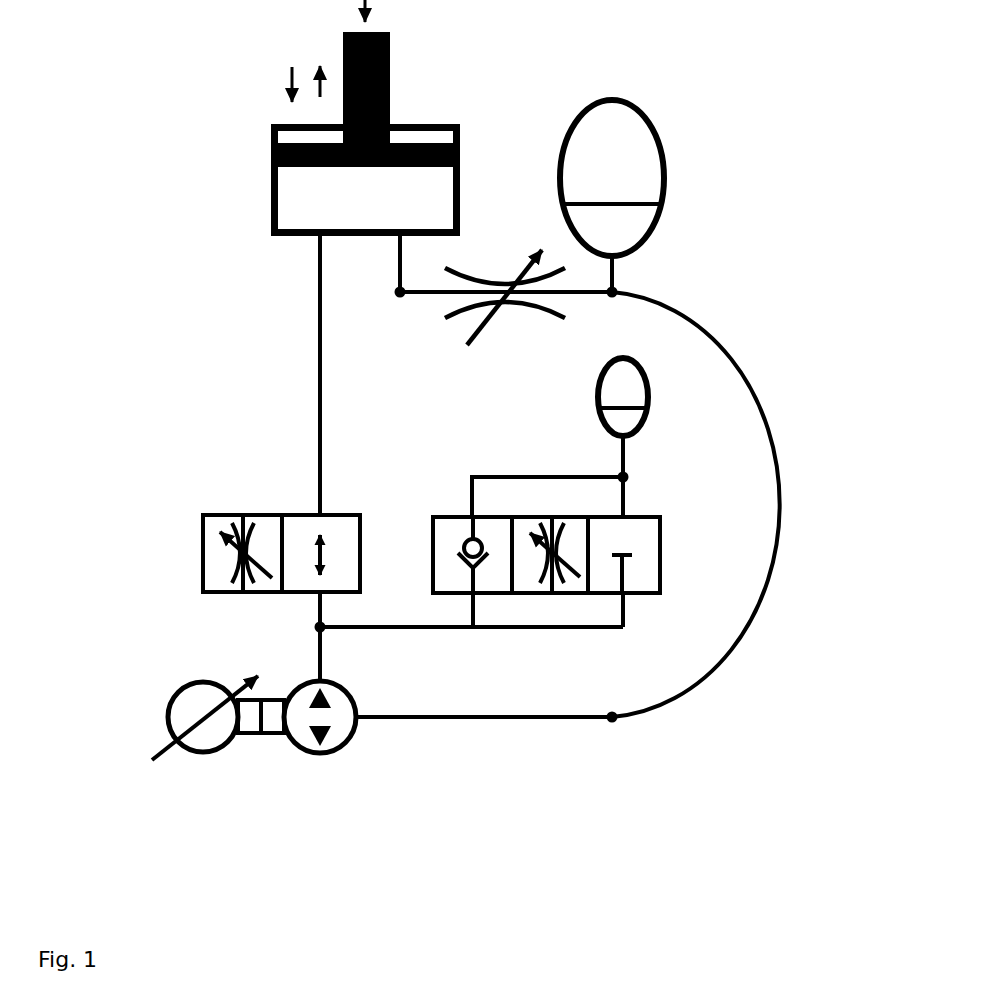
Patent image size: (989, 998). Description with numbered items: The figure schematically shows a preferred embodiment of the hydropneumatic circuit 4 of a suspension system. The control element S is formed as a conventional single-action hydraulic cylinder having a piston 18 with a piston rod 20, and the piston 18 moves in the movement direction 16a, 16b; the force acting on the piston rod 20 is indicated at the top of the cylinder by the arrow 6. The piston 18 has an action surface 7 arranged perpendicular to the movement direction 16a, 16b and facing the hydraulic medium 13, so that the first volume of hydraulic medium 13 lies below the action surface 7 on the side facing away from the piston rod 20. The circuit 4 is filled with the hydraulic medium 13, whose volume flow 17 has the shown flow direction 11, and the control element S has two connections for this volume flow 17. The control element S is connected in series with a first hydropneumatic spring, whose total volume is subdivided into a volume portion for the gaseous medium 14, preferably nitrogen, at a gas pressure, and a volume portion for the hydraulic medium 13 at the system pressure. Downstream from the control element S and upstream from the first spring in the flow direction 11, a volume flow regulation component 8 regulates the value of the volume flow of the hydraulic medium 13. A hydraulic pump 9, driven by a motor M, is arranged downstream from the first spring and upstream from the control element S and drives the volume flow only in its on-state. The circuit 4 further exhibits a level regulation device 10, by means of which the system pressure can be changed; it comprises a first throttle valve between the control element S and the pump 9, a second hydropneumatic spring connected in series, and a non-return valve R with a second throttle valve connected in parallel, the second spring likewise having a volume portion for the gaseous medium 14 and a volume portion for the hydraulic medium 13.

The hydropneumatic circuit 4 is at (202, 333).
The force on piston rod 6 is at (368, 9).
The action surface 7 is at (338, 170).
The volume flow regulation component 8 is at (506, 323).
The hydraulic pump 9 is at (340, 728).
The level regulation device 10 is at (212, 497).
The flow direction 11 is at (388, 252).
The hydraulic medium 13 is at (278, 227).
The gaseous medium 14 is at (572, 130).
The movement direction 16a is at (292, 80).
The movement direction 16b is at (315, 86).
The volume flow 17 is at (415, 254).
The piston 18 is at (390, 88).
The piston rod 20 is at (390, 48).